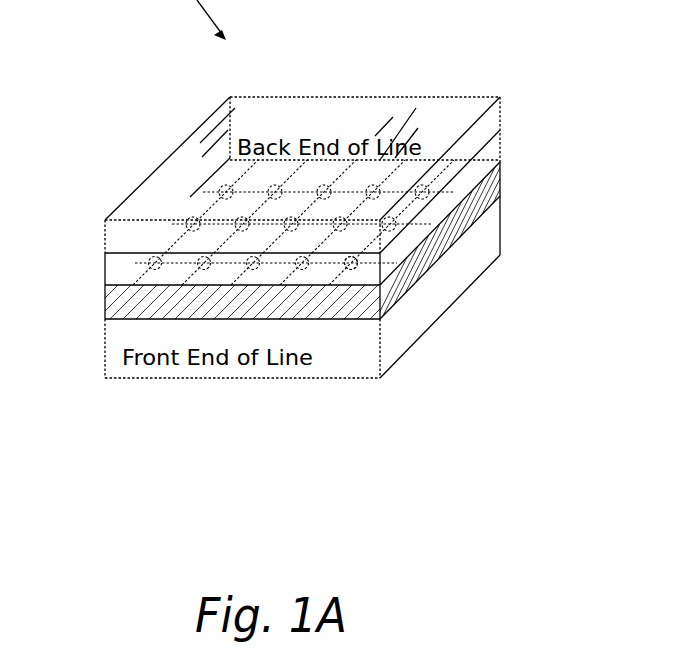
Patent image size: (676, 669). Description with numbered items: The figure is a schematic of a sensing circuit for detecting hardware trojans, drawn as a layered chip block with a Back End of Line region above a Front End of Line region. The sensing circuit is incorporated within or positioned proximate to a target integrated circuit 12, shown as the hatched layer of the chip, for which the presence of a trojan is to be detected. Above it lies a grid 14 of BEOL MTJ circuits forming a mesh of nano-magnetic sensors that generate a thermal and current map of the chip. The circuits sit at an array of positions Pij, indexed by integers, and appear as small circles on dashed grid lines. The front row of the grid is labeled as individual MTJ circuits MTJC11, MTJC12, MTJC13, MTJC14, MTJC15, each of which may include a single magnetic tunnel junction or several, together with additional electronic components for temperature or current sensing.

The target integrated circuit 12 is at (493, 195).
The grid of BEOL MTJ circuits 14 is at (374, 274).
The array of positions Pij is at (263, 188).
The MTJ circuit MTJC11 is at (155, 269).
The MTJ circuit MTJC12 is at (204, 269).
The MTJ circuit MTJC13 is at (253, 269).
The MTJ circuit MTJC14 is at (302, 269).
The MTJ circuit MTJC15 is at (351, 269).